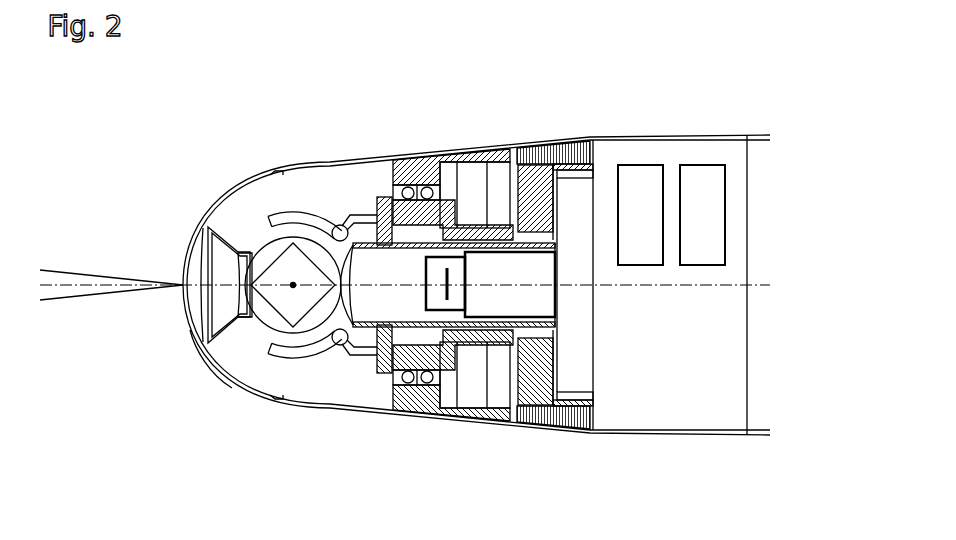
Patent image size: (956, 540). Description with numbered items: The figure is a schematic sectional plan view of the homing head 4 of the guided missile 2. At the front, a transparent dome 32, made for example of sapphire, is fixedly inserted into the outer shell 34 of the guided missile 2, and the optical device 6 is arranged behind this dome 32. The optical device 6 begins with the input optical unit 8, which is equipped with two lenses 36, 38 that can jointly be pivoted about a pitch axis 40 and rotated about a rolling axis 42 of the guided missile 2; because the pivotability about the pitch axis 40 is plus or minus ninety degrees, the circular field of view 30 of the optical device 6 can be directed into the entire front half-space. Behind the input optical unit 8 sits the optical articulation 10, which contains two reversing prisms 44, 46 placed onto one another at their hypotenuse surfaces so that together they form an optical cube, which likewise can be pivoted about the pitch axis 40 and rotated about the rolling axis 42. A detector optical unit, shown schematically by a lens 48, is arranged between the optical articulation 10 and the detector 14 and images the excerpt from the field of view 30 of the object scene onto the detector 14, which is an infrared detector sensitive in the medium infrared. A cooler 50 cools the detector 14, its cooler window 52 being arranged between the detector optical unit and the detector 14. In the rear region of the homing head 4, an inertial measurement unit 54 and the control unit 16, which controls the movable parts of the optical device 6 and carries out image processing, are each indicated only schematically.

The guided missile 2 is at (598, 118).
The homing head 4 is at (357, 152).
The optical device 6 is at (234, 228).
The input optical unit 8 is at (234, 328).
The optical articulation 10 is at (317, 252).
The detector 14 is at (452, 272).
The control unit 16 is at (713, 267).
The field of view 30 is at (92, 276).
The transparent dome 32 is at (232, 372).
The outer shell 34 is at (334, 409).
The lens 36 is at (202, 250).
The lens 38 is at (242, 295).
The pitch axis 40 is at (293, 285).
The rolling axis 42 is at (670, 288).
The reversing prism 44 is at (280, 262).
The reversing prism 46 is at (283, 298).
The lens 48 is at (353, 293).
The cooler 50 is at (510, 284).
The cooler window 52 is at (426, 278).
The inertial measurement unit 54 is at (640, 267).